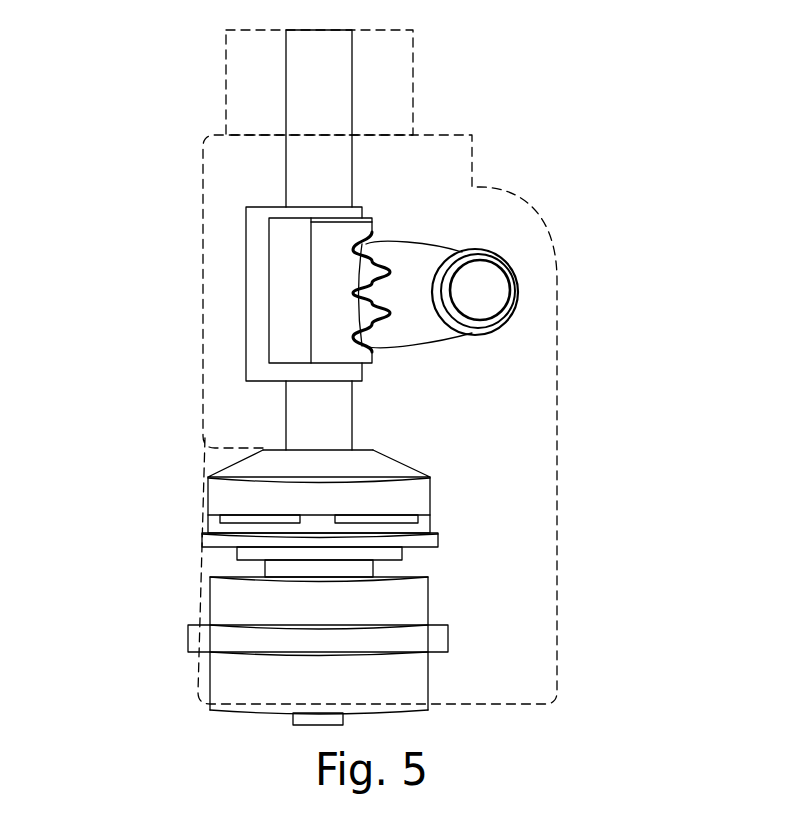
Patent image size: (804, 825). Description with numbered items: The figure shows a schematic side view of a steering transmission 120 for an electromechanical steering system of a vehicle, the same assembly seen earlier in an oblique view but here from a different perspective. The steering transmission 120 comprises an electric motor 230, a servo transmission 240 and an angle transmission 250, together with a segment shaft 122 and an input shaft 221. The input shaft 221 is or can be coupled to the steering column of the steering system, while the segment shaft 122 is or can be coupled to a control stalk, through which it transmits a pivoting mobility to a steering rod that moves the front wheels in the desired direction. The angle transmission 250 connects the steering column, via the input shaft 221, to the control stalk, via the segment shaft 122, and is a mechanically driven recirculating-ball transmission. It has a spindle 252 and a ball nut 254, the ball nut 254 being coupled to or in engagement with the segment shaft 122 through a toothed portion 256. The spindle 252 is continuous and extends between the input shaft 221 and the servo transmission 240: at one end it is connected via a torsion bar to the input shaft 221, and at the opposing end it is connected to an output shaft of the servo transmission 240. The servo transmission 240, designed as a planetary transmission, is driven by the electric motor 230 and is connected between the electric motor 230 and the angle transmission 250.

The steering transmission 120 is at (140, 93).
The segment shaft 122 is at (518, 280).
The input shaft 221 is at (286, 87).
The electric motor 230 is at (210, 685).
The servo transmission 240 is at (195, 496).
The angle transmission 250 is at (178, 178).
The spindle 252 is at (286, 421).
The ball nut 254 is at (246, 277).
The toothed portion 256 is at (378, 230).